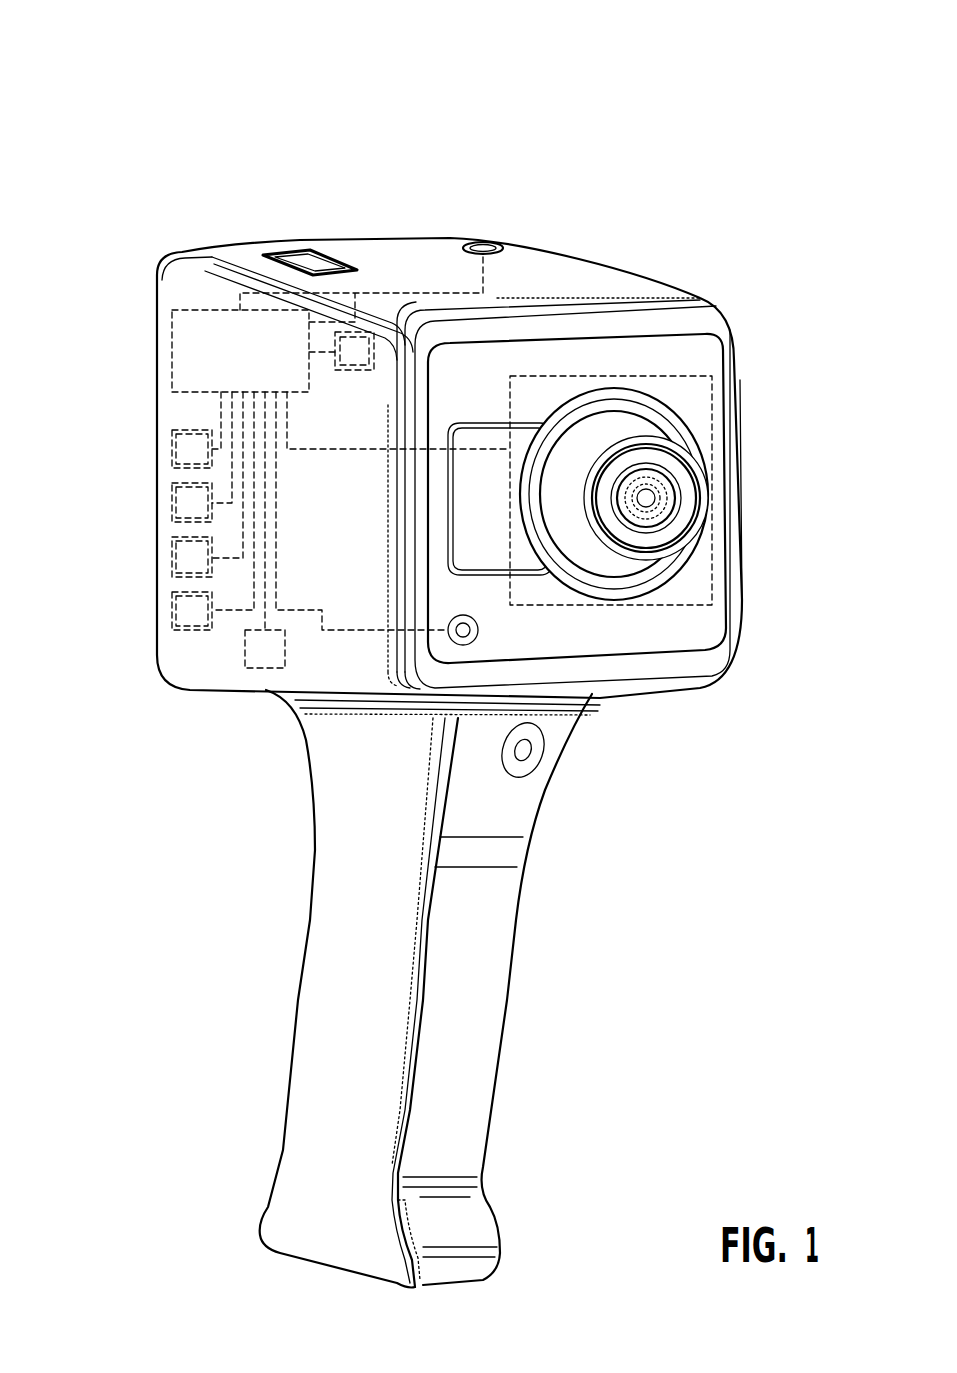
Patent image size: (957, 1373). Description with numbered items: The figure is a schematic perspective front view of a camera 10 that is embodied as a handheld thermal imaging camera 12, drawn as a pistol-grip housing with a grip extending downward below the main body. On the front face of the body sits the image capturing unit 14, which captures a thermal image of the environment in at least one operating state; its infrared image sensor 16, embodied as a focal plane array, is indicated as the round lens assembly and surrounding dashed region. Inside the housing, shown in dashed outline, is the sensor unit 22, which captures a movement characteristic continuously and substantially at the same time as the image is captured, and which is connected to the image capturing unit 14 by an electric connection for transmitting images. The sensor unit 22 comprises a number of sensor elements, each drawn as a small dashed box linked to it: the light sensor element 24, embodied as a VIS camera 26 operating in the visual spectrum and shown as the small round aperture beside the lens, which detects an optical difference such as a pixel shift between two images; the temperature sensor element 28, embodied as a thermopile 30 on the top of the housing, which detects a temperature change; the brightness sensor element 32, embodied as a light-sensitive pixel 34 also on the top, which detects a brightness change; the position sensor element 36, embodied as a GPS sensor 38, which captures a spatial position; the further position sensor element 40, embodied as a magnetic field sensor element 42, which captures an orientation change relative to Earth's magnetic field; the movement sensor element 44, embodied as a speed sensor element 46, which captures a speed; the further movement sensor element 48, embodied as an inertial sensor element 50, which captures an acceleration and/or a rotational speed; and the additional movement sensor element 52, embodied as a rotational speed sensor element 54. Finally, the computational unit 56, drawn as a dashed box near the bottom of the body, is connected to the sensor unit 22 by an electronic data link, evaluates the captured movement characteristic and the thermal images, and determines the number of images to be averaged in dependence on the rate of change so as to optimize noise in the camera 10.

The camera 10 is at (464, 651).
The handheld thermal imaging camera 12 is at (370, 135).
The image capturing unit 14 is at (748, 497).
The infrared image sensor 16 is at (715, 410).
The sensor unit 22 is at (186, 352).
The light sensor element 24 is at (478, 628).
The VIS camera 26 is at (470, 641).
The temperature sensor element 28 is at (300, 253).
The thermopile 30 is at (322, 268).
The brightness sensor element 32 is at (477, 244).
The light-sensitive pixel 34 is at (492, 244).
The position sensor element 36 is at (172, 437).
The GPS sensor 38 is at (172, 457).
The further position sensor element 40 is at (172, 493).
The magnetic field sensor element 42 is at (172, 515).
The movement sensor element 44 is at (364, 333).
The speed sensor element 46 is at (368, 350).
The further movement sensor element 48 is at (172, 548).
The inertial sensor element 50 is at (172, 568).
The additional movement sensor element 52 is at (172, 603).
The rotational speed sensor element 54 is at (172, 625).
The computational unit 56 is at (262, 668).